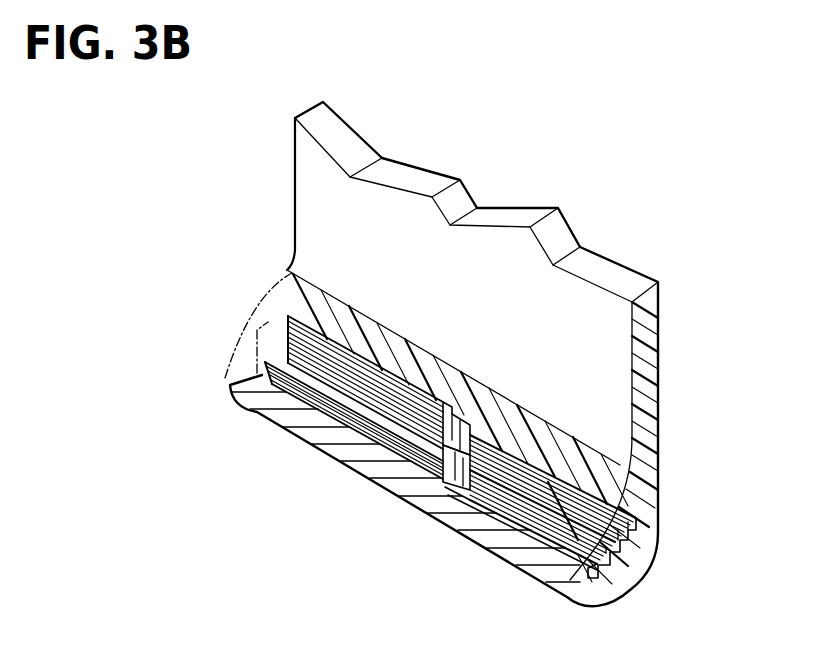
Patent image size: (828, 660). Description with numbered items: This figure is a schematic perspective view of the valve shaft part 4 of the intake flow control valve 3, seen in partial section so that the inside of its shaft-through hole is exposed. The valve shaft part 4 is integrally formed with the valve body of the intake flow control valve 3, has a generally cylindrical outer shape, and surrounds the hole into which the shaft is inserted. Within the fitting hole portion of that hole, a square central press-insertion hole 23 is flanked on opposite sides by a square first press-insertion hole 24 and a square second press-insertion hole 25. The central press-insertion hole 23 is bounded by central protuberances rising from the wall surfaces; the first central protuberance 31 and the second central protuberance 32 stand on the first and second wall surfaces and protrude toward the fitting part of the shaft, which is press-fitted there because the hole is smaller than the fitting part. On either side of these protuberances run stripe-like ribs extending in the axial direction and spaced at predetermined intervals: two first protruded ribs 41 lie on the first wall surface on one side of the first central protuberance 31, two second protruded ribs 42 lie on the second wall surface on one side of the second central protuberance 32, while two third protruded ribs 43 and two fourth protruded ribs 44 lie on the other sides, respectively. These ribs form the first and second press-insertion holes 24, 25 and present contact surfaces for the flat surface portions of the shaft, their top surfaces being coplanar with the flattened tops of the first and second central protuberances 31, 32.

The intake flow control valve 3 is at (500, 257).
The central press-insertion hole 23 is at (450, 428).
The first press-insertion hole 24 is at (350, 315).
The second press-insertion hole 25 is at (540, 462).
The valve shaft part 4 is at (653, 527).
The first protruded ribs 41 is at (290, 335).
The second protruded ribs 42 is at (297, 385).
The third protruded ribs 43 is at (628, 560).
The fourth protruded ribs 44 is at (547, 513).
The first central protuberance 31 is at (440, 447).
The second central protuberance 32 is at (443, 470).